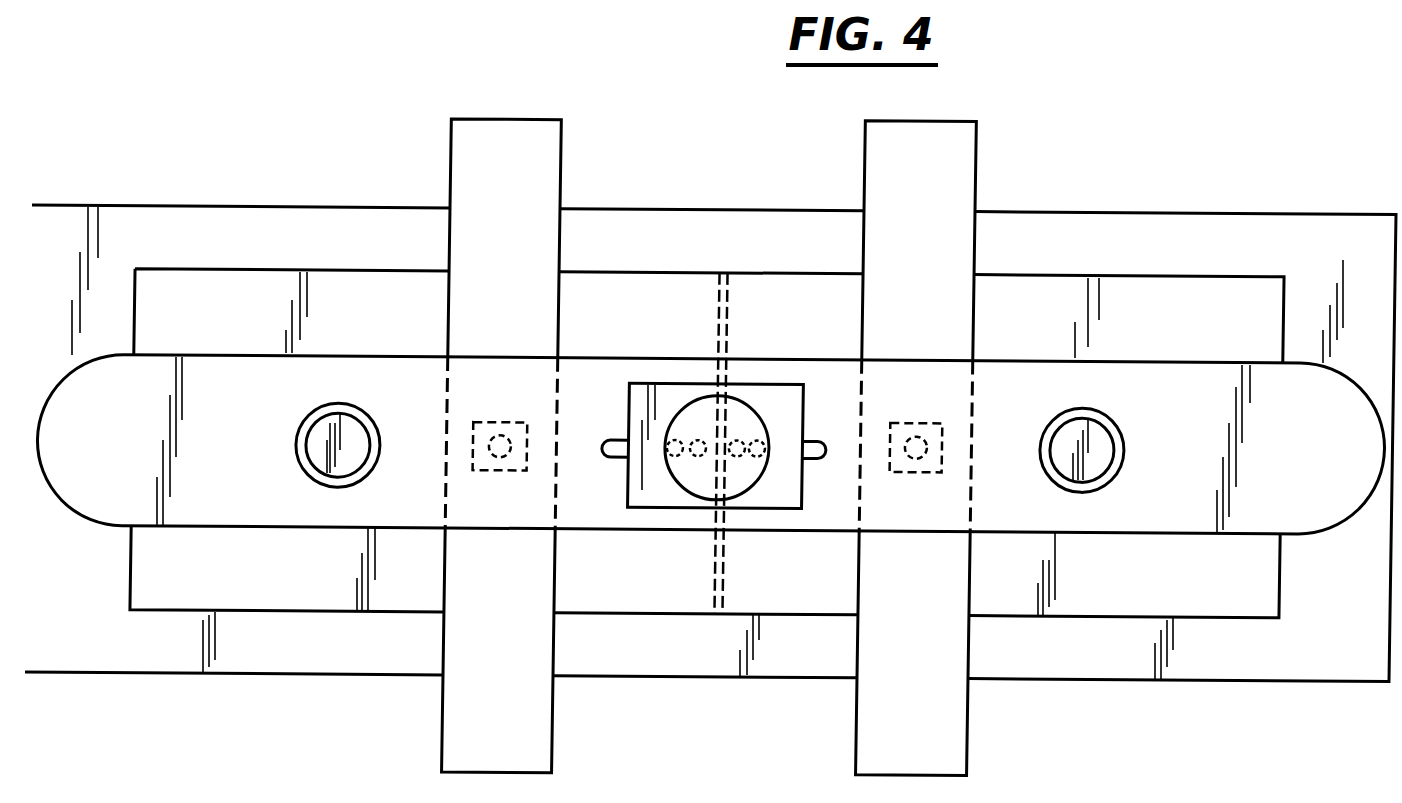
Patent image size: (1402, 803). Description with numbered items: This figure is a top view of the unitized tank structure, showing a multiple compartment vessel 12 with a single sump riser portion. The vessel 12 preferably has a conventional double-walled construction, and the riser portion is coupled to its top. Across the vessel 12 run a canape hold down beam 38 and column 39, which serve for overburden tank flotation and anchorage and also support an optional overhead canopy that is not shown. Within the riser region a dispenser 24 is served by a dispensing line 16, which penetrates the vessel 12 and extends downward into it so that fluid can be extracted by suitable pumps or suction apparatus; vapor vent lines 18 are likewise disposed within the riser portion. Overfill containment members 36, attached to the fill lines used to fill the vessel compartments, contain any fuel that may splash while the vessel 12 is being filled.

The vessel 12 is at (1271, 590).
The canape hold down beam 38 is at (877, 166).
The overfill containment members 36 is at (315, 410).
The column 39 is at (477, 467).
The dispenser 24 is at (663, 493).
The dispensing line 16 is at (718, 452).
The vapor vent lines 18 is at (675, 435).